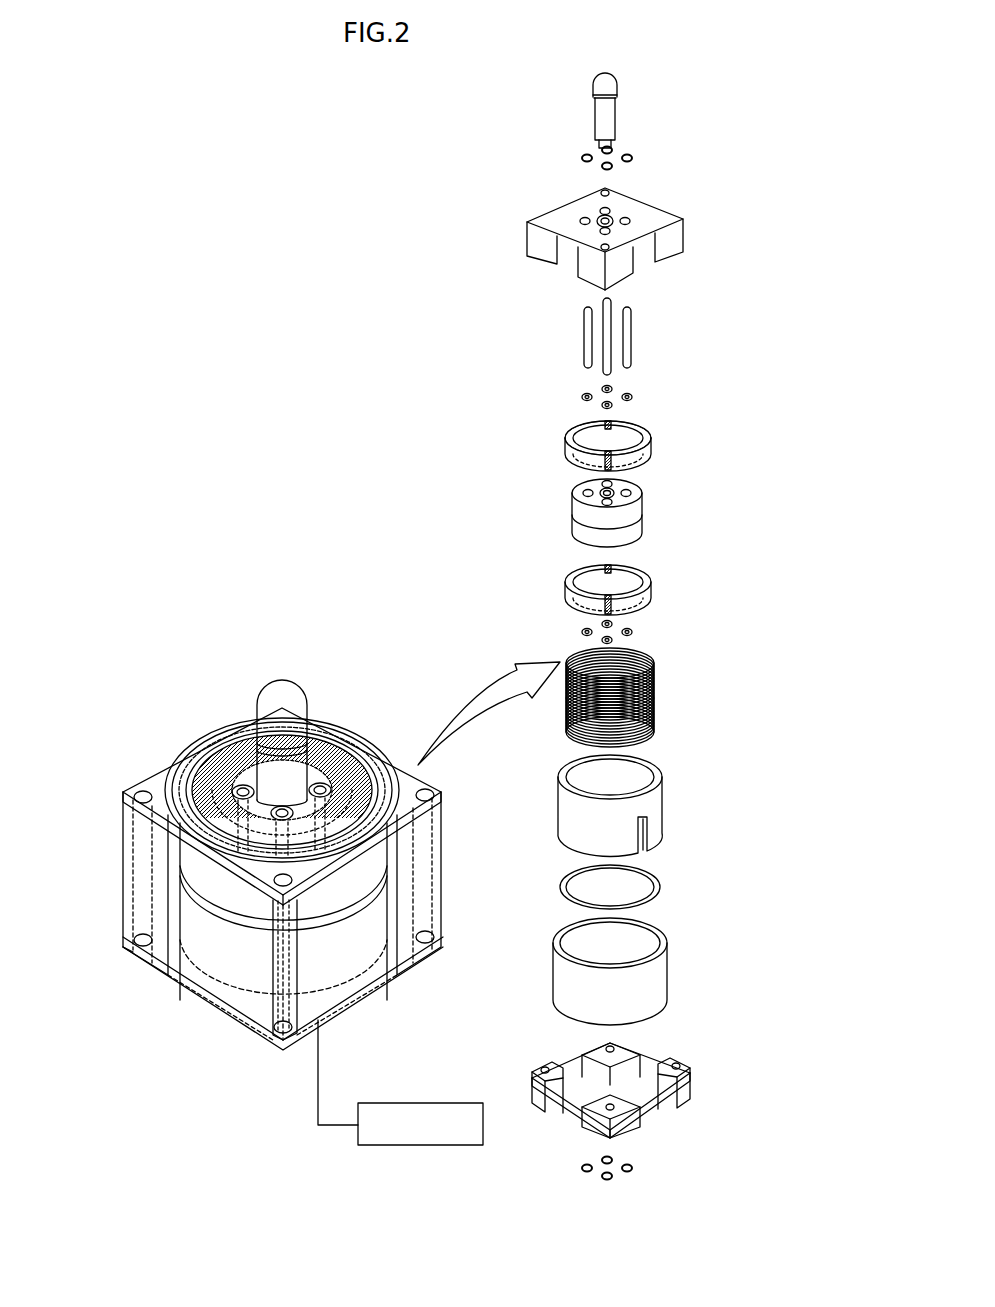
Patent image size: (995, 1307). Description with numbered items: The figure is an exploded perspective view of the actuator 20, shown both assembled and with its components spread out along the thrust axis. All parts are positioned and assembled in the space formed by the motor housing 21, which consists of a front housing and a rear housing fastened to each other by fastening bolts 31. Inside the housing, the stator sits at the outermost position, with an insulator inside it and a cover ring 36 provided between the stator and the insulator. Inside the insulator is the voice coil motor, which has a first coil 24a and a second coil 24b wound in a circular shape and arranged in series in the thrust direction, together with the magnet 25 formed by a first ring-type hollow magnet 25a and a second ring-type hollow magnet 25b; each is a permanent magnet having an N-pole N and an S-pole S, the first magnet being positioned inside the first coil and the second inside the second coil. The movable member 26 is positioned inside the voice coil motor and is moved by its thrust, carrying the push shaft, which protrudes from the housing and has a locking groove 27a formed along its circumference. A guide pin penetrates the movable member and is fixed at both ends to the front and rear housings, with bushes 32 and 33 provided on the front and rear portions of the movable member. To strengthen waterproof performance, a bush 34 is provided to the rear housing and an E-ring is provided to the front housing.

The actuator 20 is at (234, 702).
The motor housing 21 is at (42, 848).
The first coil 24a is at (656, 680).
The second coil 24b is at (635, 725).
The magnet 25 is at (470, 483).
The first ring-type hollow magnet 25a is at (572, 453).
The second ring-type hollow magnet 25b is at (570, 592).
The movable member 26 is at (641, 515).
The locking groove 27a is at (605, 85).
The fastening bolts 31 is at (143, 835).
The bush 32 is at (632, 398).
The bush 33 is at (633, 630).
The bush 34 is at (628, 1165).
The cover ring 36 is at (655, 887).
The S-pole S is at (643, 438).
The N-pole N is at (650, 448).